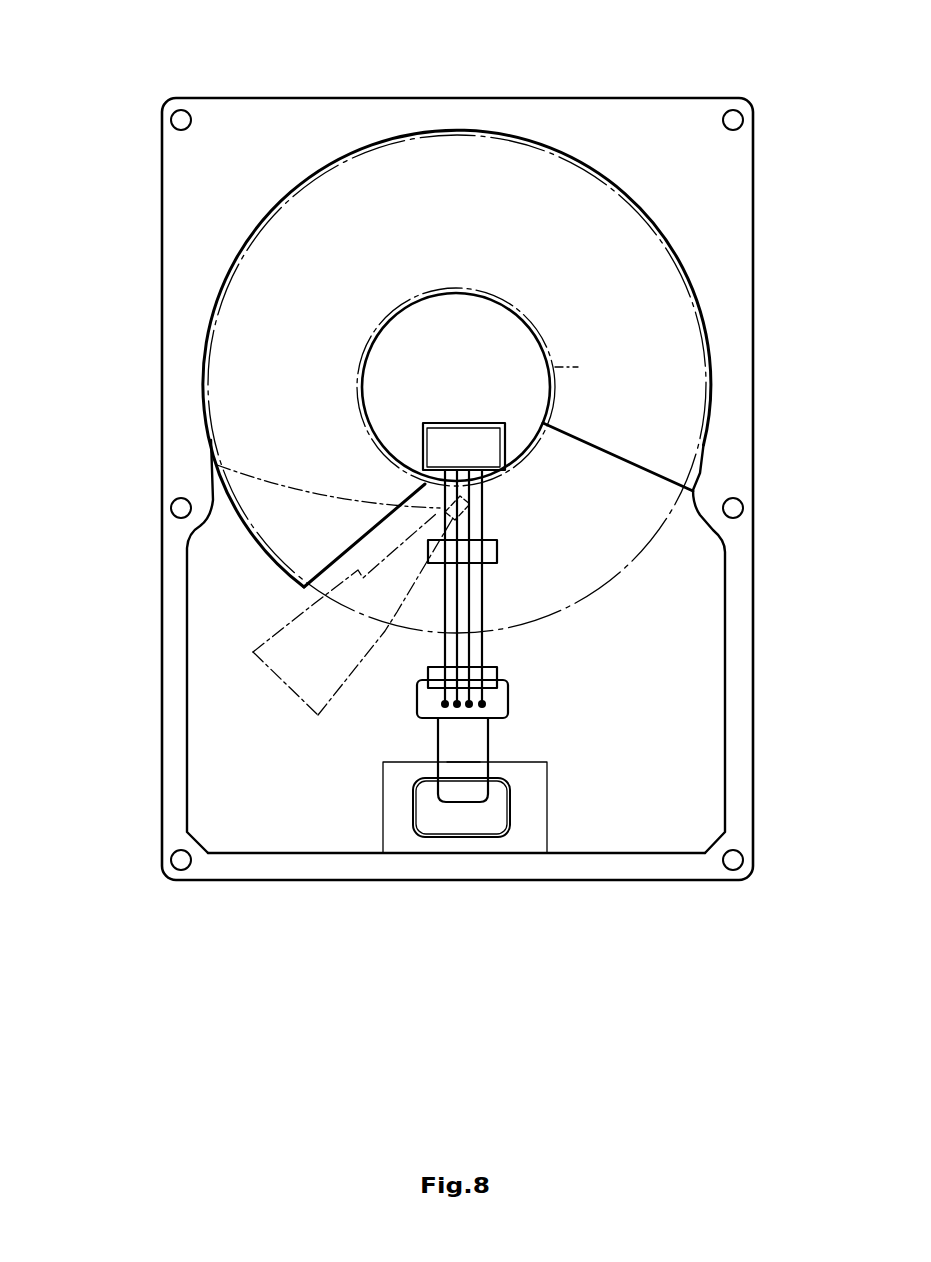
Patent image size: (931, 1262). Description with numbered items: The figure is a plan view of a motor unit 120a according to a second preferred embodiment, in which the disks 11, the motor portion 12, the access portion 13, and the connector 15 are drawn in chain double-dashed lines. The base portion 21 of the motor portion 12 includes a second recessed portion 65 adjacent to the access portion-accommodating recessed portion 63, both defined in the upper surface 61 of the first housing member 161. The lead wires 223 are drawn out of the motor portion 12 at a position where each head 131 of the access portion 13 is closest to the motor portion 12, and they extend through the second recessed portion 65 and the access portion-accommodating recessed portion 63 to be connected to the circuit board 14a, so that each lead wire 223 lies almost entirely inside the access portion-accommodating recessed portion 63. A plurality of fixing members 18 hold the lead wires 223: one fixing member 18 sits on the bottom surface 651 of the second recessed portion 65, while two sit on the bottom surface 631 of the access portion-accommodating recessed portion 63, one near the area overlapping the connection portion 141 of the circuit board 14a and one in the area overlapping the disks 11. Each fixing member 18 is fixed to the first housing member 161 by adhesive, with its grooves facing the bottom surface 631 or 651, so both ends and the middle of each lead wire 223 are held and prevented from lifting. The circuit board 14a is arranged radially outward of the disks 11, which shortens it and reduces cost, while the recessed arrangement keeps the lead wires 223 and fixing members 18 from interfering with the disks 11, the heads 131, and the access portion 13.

The motor unit 120a is at (205, 66).
The first housing member 161 is at (175, 229).
The bottom surface of the access portion-accommodating recessed portion 631 is at (320, 800).
The access portion-accommodating recessed portion 63 is at (265, 806).
The upper surface 61 is at (214, 975).
The disks 11 is at (687, 267).
The motor portion 12 is at (555, 367).
The base portion 21 is at (385, 342).
The second recessed portion 65 is at (422, 453).
The bottom surface of the second recessed portion 651 is at (423, 430).
The fixing members 18 is at (492, 455).
The lead wires 223 is at (445, 647).
The connection portion 141 is at (500, 707).
The circuit board 14a is at (473, 772).
The connector 15 is at (513, 800).
The access portion 13 is at (315, 615).
The head 131 is at (440, 508).